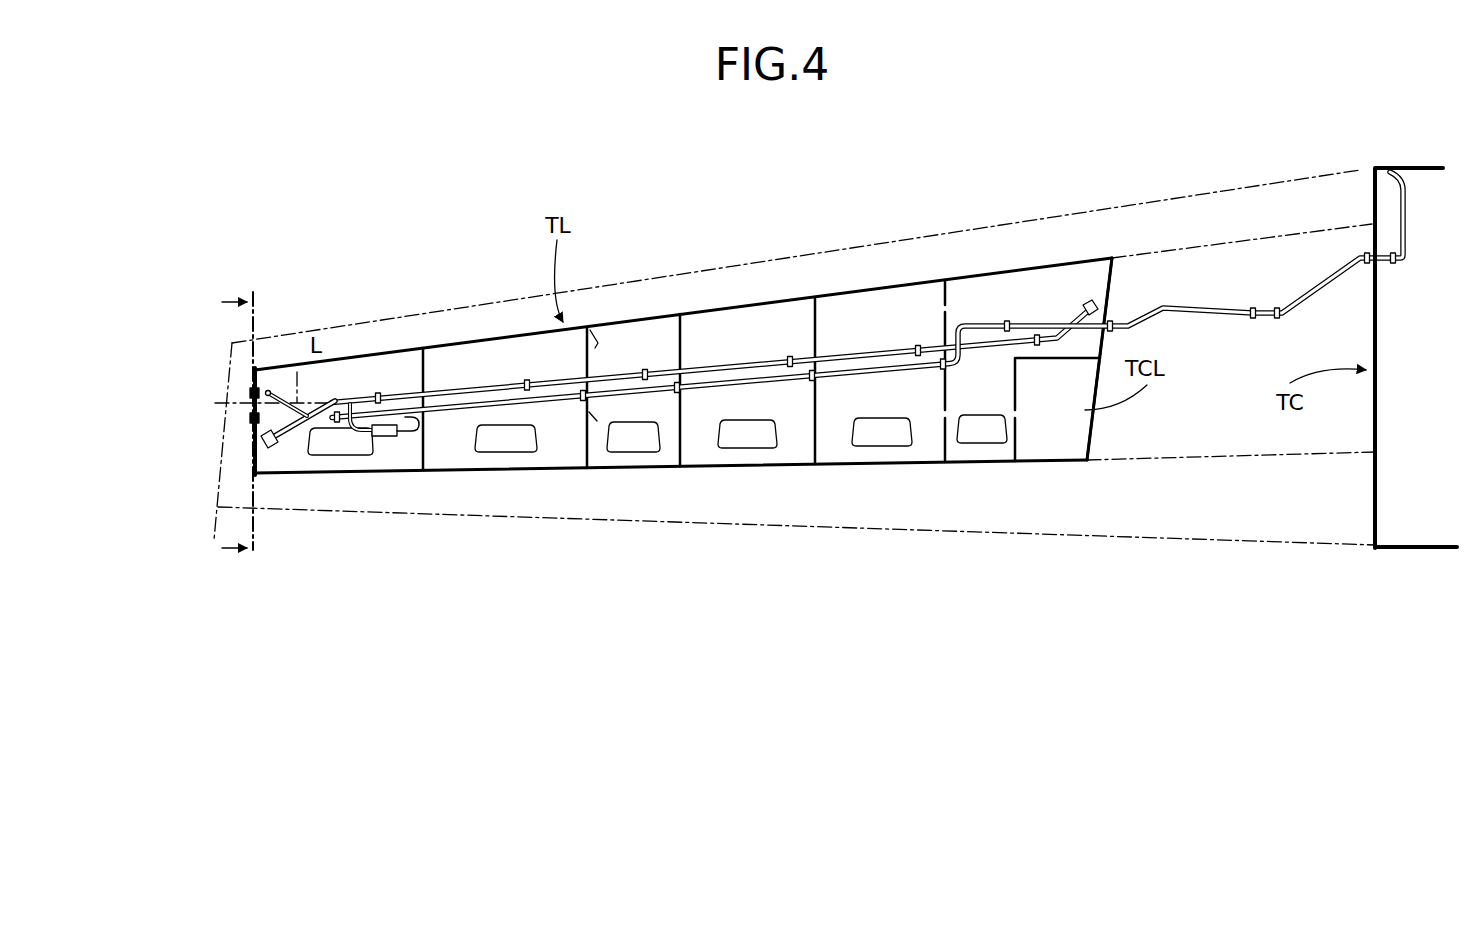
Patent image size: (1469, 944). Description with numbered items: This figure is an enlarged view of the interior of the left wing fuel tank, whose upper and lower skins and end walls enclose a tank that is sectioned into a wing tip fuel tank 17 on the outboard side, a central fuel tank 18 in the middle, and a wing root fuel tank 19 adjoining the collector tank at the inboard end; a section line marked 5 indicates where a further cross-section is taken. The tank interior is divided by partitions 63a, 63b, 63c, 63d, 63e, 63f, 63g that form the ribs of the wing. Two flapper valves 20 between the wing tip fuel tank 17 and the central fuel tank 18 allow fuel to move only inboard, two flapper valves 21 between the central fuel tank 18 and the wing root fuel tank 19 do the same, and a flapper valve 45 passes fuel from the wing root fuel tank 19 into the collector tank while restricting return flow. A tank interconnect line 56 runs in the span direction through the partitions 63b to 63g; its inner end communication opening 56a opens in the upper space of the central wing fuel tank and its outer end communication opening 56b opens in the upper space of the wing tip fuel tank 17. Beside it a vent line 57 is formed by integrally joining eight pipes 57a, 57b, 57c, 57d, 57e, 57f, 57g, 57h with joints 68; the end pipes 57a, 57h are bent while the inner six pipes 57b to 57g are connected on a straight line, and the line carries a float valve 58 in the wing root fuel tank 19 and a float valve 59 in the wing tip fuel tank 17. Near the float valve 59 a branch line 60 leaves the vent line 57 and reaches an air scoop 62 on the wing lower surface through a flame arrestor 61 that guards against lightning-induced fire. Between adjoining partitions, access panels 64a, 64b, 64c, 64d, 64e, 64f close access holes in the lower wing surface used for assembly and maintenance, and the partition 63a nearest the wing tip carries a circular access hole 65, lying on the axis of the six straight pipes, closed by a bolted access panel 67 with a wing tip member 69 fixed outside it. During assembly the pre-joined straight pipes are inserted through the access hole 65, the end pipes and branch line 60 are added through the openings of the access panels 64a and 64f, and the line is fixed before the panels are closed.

The section line of FIG. 5 is at (239, 431).
The wing tip fuel tank 17 is at (432, 352).
The central fuel tank 18 is at (727, 318).
The wing root fuel tank 19 is at (1045, 273).
The flapper valve 20 is at (598, 340).
The flapper valve 21 is at (951, 304).
The flapper valve 45 is at (1030, 425).
The tank interconnect line 56 is at (870, 380).
The inner end communication opening 56a is at (1383, 168).
The outer end communication opening 56b is at (265, 393).
The vent line 57 is at (823, 352).
The pipe 57a is at (266, 450).
The pipe 57b is at (388, 392).
The pipe 57c is at (498, 382).
The pipe 57d is at (570, 381).
The pipe 57e is at (688, 367).
The pipe 57f is at (870, 354).
The pipe 57g is at (993, 340).
The pipe 57h is at (1053, 340).
The float valve 58 is at (1090, 307).
The float valve 59 is at (273, 460).
The branch line 60 is at (360, 433).
The flame arrestor 61 is at (390, 447).
The air scoop 62 is at (420, 427).
The partition 63a is at (257, 455).
The partition 63b is at (425, 468).
The partition 63c is at (590, 467).
The partition 63d is at (682, 440).
The partition 63e is at (817, 443).
The partition 63f is at (947, 447).
The partition 63g is at (1087, 436).
The access panel 64a is at (348, 450).
The access panel 64b is at (505, 445).
The access panel 64c is at (633, 443).
The access panel 64d is at (758, 445).
The access panel 64e is at (878, 440).
The access panel 64f is at (997, 437).
The circular access hole 65 is at (295, 383).
The access panel 67 is at (253, 413).
The joint 68 is at (378, 395).
The wing tip member 69 is at (222, 395).